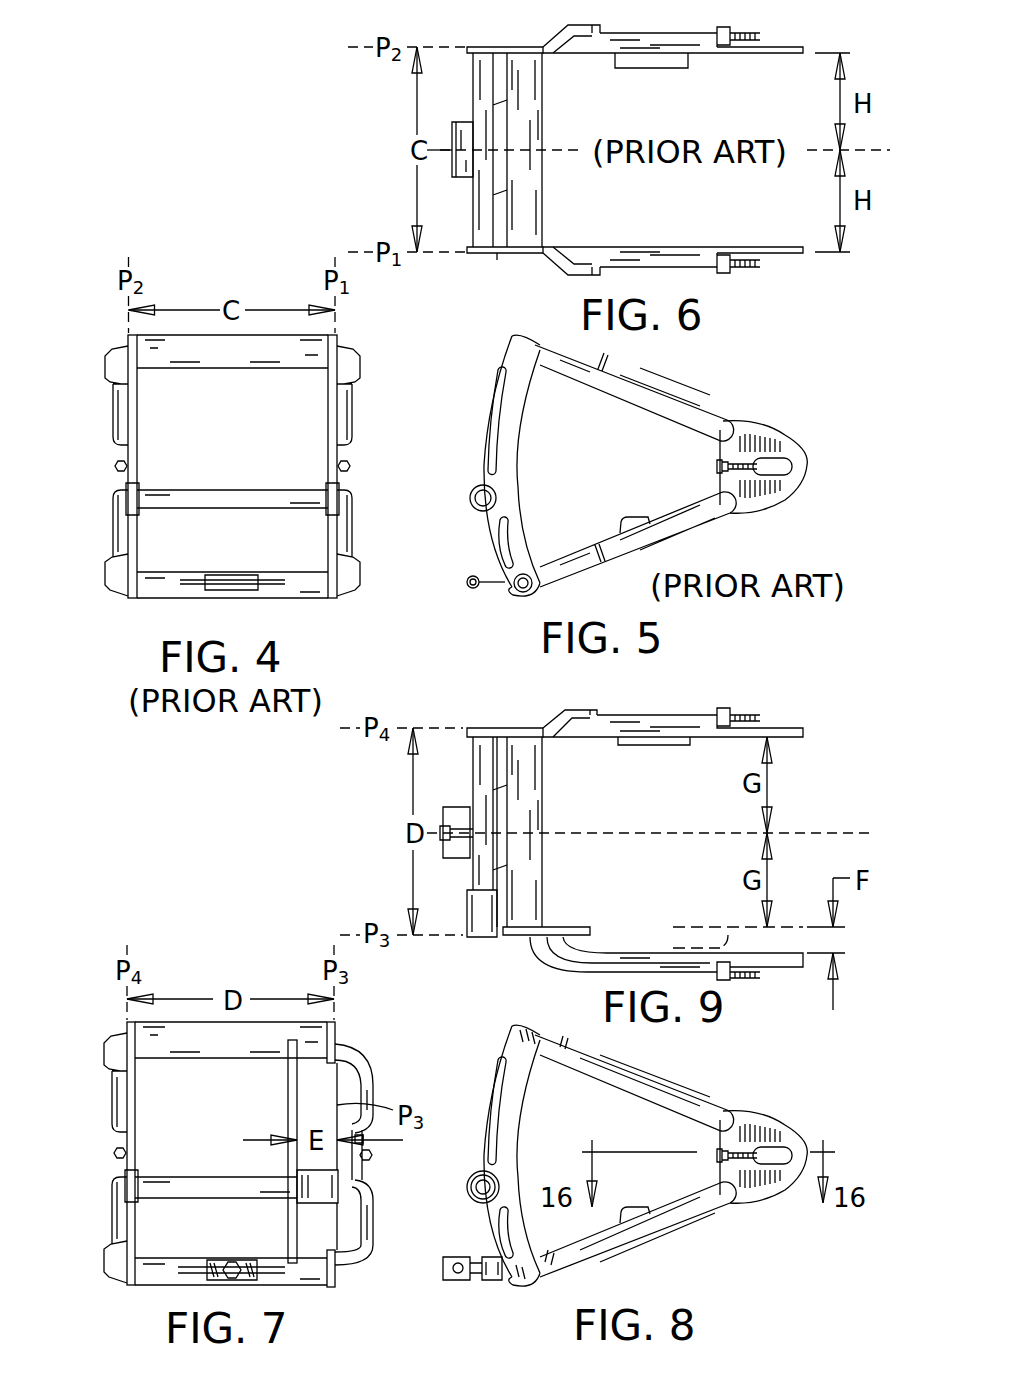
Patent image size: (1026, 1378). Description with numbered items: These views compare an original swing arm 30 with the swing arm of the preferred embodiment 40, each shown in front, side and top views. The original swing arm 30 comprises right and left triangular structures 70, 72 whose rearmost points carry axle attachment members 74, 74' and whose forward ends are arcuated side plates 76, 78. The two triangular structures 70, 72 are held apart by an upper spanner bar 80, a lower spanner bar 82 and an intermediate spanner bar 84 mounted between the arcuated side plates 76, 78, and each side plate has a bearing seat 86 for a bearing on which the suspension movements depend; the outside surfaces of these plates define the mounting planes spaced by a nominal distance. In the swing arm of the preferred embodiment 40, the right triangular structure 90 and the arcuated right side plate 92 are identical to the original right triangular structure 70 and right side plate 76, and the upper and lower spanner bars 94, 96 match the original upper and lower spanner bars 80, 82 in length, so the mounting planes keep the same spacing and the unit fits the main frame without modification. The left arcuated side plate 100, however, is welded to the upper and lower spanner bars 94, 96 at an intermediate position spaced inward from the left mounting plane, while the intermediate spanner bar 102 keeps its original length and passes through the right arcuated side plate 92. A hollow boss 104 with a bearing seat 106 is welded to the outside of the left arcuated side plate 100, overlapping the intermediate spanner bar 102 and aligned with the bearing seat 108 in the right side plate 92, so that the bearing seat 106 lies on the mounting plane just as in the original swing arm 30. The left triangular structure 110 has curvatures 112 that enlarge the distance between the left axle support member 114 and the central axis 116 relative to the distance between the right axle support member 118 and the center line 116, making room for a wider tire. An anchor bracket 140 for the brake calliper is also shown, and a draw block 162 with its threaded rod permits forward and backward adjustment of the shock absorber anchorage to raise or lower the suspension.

In FIG. 6, the original swing arm 30 is at (318, 142).
In FIG. 5, the original swing arm 30 is at (725, 405).
In FIG. 9, the swing arm of the preferred embodiment 40 is at (262, 803).
In FIG. 6, the right triangular structure 70 is at (703, 53).
In FIG. 6, the left triangular structure 72 is at (660, 247).
In FIG. 6, the axle attachment member 74 is at (703, 29).
In FIG. 5, the axle attachment member 74 is at (784, 478).
In FIG. 6, the axle attachment member 74' is at (683, 221).
In FIG. 4, the arcuated side plate 76 is at (128, 445).
In FIG. 6, the arcuated side plate 76 is at (527, 46).
In FIG. 4, the arcuated side plate 78 is at (337, 448).
In FIG. 6, the arcuated side plate 78 is at (500, 253).
In FIG. 5, the arcuated side plate 78 is at (498, 383).
In FIG. 4, the upper spanner bar 80 is at (212, 363).
In FIG. 6, the upper spanner bar 80 is at (543, 117).
In FIG. 4, the lower spanner bar 82 is at (155, 598).
In FIG. 5, the lower spanner bar 82 is at (520, 590).
In FIG. 4, the intermediate spanner bar 84 is at (227, 493).
In FIG. 6, the intermediate spanner bar 84 is at (473, 107).
In FIG. 5, the bearing seat 86 is at (483, 500).
In FIG. 9, the right triangular structure 90 is at (600, 725).
In FIG. 7, the right triangular structure 90 is at (112, 1090).
In FIG. 9, the arcuated right side plate 92 is at (507, 728).
In FIG. 7, the arcuated right side plate 92 is at (127, 1135).
In FIG. 9, the upper spanner bar 94 is at (538, 865).
In FIG. 7, the upper spanner bar 94 is at (165, 1047).
In FIG. 7, the lower spanner bar 96 is at (155, 1280).
In FIG. 9, the left arcuated side plate 100 is at (463, 897).
In FIG. 7, the left arcuated side plate 100 is at (290, 1063).
In FIG. 8, the left arcuated side plate 100 is at (515, 1107).
In FIG. 7, the intermediate spanner bar 102 is at (150, 1180).
In FIG. 9, the hollow boss 104 is at (463, 895).
In FIG. 7, the hollow boss 104 is at (310, 1203).
In FIG. 8, the bearing seat 106 is at (480, 1173).
In FIG. 7, the bearing seat 108 is at (125, 1173).
In FIG. 9, the left triangular structure 110 is at (620, 948).
In FIG. 8, the left triangular structure 110 is at (663, 1093).
In FIG. 9, the curvatures 112 is at (610, 973).
In FIG. 7, the curvatures 112 is at (353, 1050).
In FIG. 9, the left axle support member 114 is at (780, 960).
In FIG. 8, the left axle support member 114 is at (787, 1190).
In FIG. 6, the central axis 116 is at (445, 150).
In FIG. 9, the central axis 116 is at (803, 832).
In FIG. 9, the right axle support member 118 is at (778, 725).
In FIG. 6, the anchor bracket 140 is at (632, 70).
In FIG. 5, the anchor bracket 140 is at (637, 517).
In FIG. 9, the anchor bracket 140 is at (635, 745).
In FIG. 8, the anchor bracket 140 is at (623, 1207).
In FIG. 9, the draw block 162 is at (453, 807).
In FIG. 8, the draw block 162 is at (453, 1283).